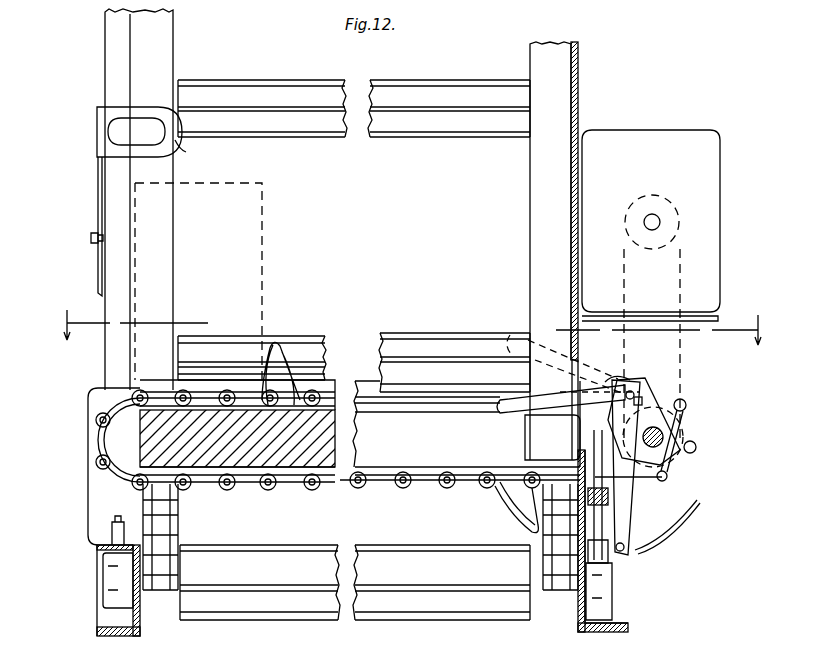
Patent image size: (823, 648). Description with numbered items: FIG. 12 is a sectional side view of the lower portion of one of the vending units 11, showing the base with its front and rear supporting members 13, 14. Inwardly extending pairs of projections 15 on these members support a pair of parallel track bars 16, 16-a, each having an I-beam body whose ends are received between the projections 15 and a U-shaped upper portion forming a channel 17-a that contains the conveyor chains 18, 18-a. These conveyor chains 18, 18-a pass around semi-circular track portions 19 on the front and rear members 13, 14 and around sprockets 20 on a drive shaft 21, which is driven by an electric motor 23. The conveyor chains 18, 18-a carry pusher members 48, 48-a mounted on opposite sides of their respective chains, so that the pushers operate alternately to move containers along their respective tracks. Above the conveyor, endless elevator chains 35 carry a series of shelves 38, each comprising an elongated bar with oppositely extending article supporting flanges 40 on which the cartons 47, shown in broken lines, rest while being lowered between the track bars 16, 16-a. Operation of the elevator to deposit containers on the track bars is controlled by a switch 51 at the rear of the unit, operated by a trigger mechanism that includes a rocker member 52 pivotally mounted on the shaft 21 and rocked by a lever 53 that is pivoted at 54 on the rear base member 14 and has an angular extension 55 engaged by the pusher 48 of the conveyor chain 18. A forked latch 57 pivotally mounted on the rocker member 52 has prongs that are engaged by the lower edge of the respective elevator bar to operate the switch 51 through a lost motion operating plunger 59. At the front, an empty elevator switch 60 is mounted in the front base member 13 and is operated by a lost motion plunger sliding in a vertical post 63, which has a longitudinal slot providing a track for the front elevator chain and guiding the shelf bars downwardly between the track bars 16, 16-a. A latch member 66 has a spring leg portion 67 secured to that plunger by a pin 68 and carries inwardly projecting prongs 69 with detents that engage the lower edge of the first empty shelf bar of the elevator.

The vending unit 11 is at (585, 108).
The front supporting member 13 is at (100, 612).
The rear supporting member 14 is at (643, 616).
The projections 15 is at (525, 441).
The track bar 16 is at (380, 458).
The track bar 16-a is at (297, 468).
The channel 17-a is at (345, 400).
The conveyor chain 18 is at (424, 480).
The conveyor chain 18-a is at (264, 488).
The semi-circular track portion 19 is at (105, 450).
The sprocket 20 is at (690, 470).
The drive shaft 21 is at (672, 433).
The electric motor 23 is at (720, 243).
The elevator chain 35 is at (180, 531).
The shelf 38 is at (287, 78).
The article supporting flange 40 is at (408, 392).
The carton 47 is at (262, 242).
The pusher member 48 is at (495, 506).
The pusher member 48-a is at (292, 345).
The switch 51 is at (605, 591).
The rocker member 52 is at (650, 390).
The lever 53 is at (628, 382).
The pivot 54 is at (620, 532).
The angular extension 55 is at (675, 542).
The forked latch 57 is at (515, 405).
The lost motion operating plunger 59 is at (612, 506).
The empty elevator switch 60 is at (103, 578).
The vertical post 63 is at (165, 58).
The latch member 66 is at (90, 136).
The spring leg portion 67 is at (98, 178).
The pin 68 is at (91, 239).
The prongs 69 is at (178, 148).